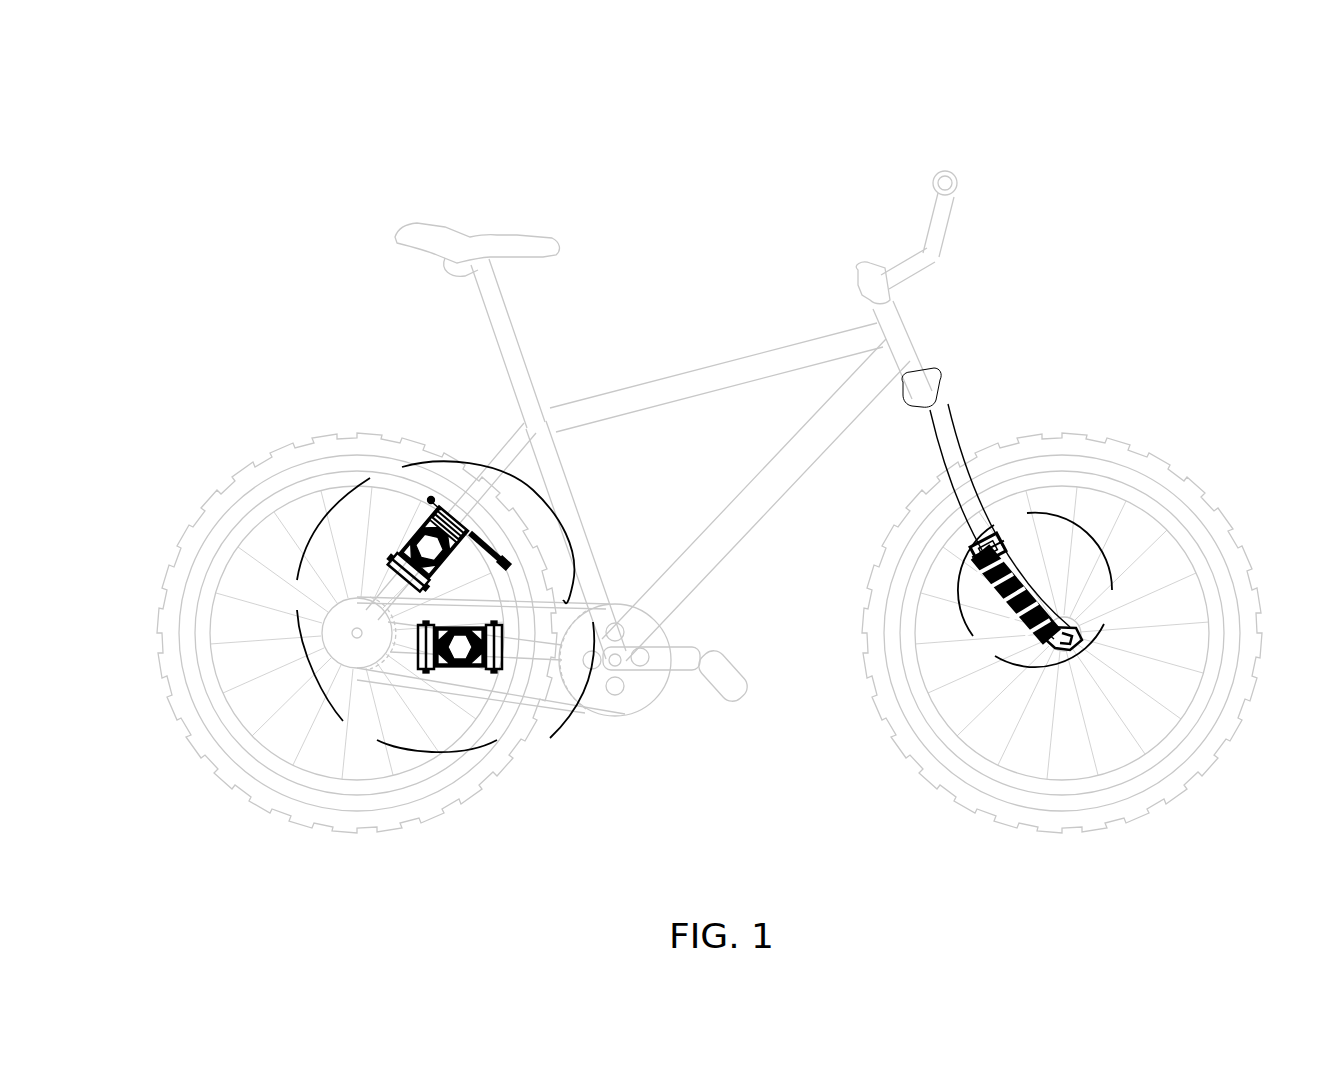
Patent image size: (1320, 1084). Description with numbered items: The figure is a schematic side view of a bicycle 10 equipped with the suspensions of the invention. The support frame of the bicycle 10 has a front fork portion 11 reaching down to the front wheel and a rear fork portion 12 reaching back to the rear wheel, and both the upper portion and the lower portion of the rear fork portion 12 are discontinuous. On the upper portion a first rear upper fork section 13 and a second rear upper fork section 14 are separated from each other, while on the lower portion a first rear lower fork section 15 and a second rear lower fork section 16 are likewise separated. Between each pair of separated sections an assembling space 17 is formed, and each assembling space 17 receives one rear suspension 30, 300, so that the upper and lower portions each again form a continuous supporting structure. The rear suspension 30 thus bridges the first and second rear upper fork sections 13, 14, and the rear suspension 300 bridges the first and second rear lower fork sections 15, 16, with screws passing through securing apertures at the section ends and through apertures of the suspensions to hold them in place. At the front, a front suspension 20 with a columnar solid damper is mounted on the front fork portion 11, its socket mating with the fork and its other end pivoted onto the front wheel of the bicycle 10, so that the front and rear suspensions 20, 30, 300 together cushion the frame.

The bicycle 10 is at (393, 223).
The front fork portion 11 is at (939, 433).
The rear fork portion 12 is at (503, 452).
The first rear upper fork section 13 is at (520, 452).
The second rear upper fork section 14 is at (390, 583).
The first rear lower fork section 15 is at (540, 648).
The second rear lower fork section 16 is at (408, 647).
The assembling space 17 is at (420, 515).
The front suspension 20 is at (985, 583).
The rear suspension 30 is at (405, 483).
The rear suspension 300 is at (465, 670).